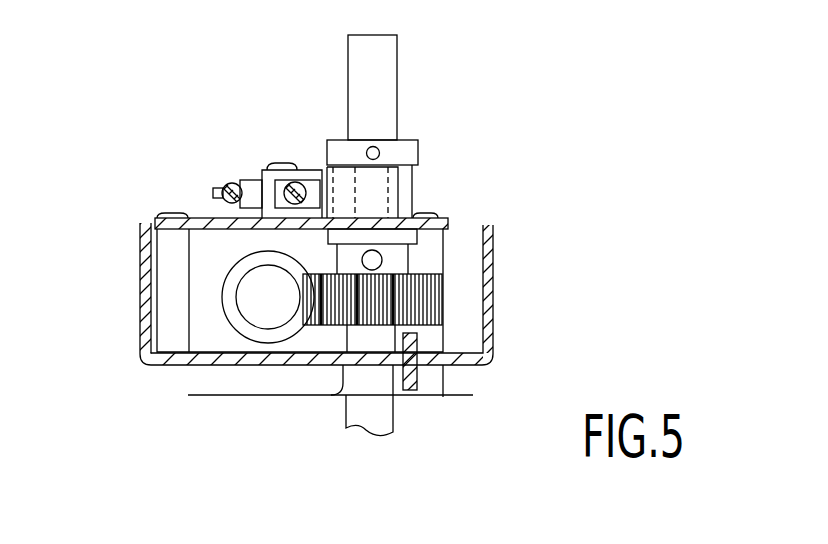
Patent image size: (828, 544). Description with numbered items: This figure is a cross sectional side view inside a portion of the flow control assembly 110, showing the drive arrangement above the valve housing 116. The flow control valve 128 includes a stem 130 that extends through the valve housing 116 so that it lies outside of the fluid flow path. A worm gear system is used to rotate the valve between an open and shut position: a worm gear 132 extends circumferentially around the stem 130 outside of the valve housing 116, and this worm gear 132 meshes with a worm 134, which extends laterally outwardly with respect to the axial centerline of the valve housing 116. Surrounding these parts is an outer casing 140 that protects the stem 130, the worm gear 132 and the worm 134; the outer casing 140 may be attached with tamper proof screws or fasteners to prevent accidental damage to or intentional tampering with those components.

The flow control assembly 110 is at (580, 127).
The valve housing 116 is at (457, 397).
The flow control valve 128 is at (337, 417).
The stem 130 is at (392, 88).
The worm gear 132 is at (433, 293).
The worm 134 is at (237, 315).
The outer casing 140 is at (493, 300).